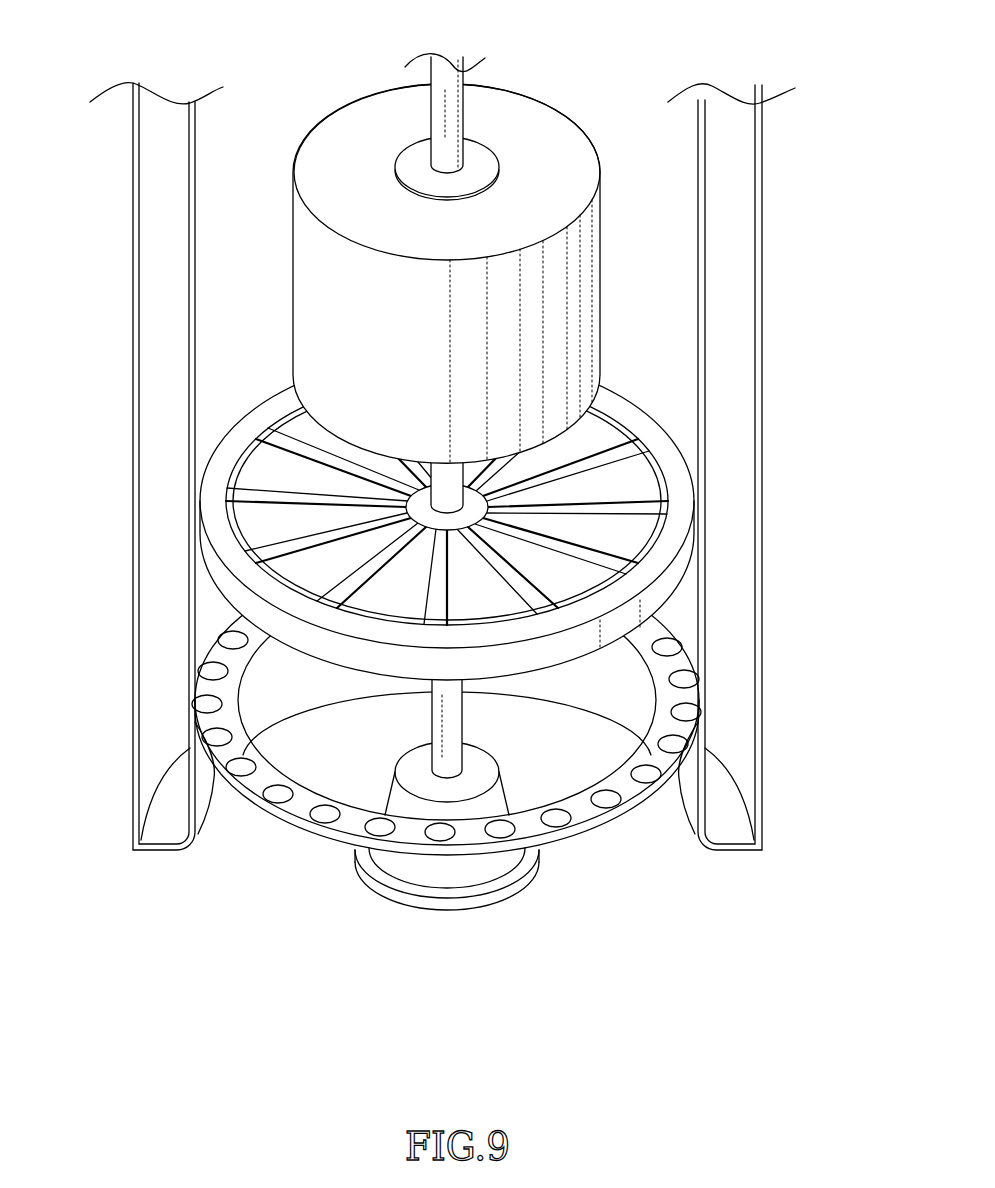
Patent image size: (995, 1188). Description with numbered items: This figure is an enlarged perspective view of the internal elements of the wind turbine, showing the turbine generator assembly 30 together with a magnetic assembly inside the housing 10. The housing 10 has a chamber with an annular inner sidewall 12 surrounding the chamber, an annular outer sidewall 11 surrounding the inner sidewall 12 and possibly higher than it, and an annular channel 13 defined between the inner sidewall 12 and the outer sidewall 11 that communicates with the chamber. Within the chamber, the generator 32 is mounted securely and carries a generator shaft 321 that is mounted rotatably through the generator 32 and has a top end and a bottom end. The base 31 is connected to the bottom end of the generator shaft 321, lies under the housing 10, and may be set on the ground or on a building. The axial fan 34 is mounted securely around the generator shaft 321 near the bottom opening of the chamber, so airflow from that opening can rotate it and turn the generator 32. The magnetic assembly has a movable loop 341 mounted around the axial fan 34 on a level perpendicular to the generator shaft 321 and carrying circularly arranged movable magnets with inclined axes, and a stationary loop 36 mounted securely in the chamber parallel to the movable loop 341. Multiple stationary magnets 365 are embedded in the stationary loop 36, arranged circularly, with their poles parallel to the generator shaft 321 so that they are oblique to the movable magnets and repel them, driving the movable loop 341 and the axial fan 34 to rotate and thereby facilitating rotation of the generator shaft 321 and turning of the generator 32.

The housing 10 is at (470, 515).
The outer sidewall 11 is at (745, 332).
The inner sidewall 12 is at (697, 817).
The channel 13 is at (736, 605).
The turbine generator assembly 30 is at (376, 510).
The base 31 is at (425, 873).
The generator 32 is at (585, 262).
The generator shaft 321 is at (456, 97).
The axial fan 34 is at (295, 470).
The movable loop 341 is at (220, 543).
The stationary loop 36 is at (446, 720).
The stationary magnets 365 is at (325, 815).